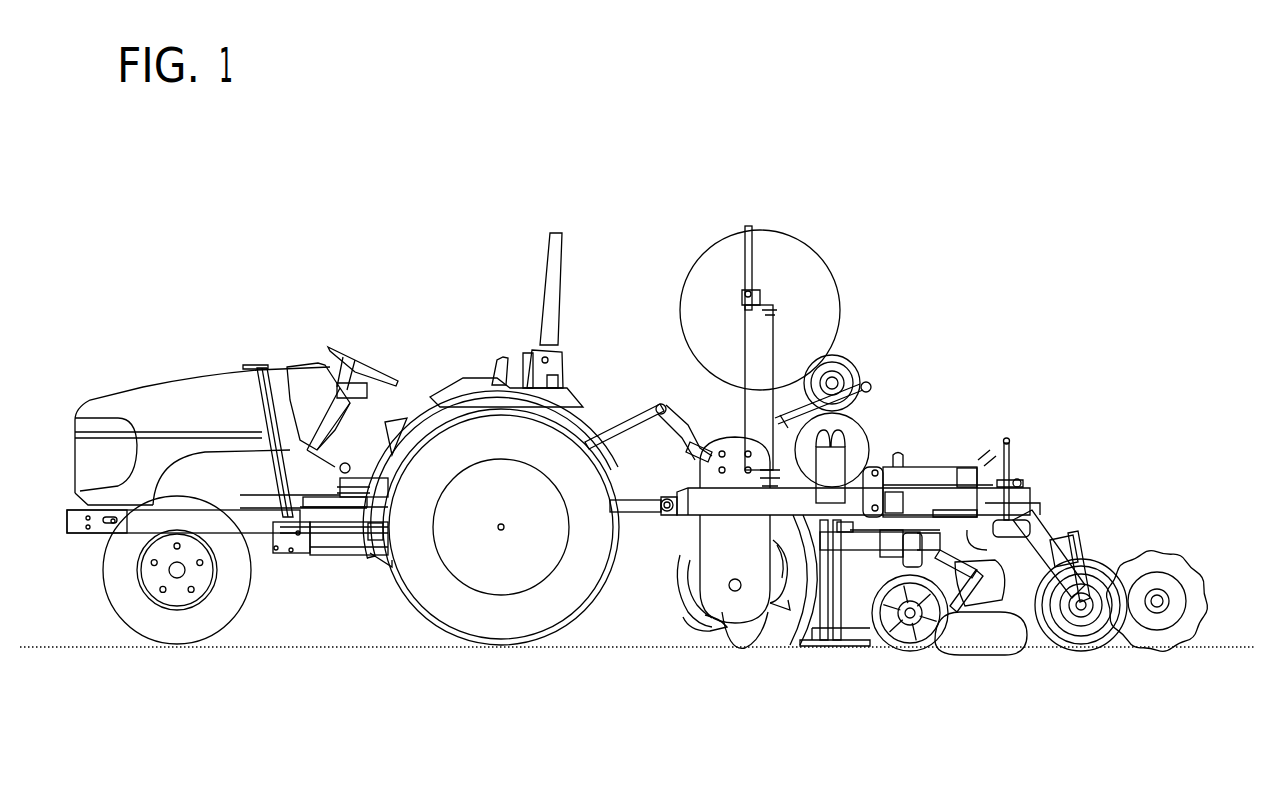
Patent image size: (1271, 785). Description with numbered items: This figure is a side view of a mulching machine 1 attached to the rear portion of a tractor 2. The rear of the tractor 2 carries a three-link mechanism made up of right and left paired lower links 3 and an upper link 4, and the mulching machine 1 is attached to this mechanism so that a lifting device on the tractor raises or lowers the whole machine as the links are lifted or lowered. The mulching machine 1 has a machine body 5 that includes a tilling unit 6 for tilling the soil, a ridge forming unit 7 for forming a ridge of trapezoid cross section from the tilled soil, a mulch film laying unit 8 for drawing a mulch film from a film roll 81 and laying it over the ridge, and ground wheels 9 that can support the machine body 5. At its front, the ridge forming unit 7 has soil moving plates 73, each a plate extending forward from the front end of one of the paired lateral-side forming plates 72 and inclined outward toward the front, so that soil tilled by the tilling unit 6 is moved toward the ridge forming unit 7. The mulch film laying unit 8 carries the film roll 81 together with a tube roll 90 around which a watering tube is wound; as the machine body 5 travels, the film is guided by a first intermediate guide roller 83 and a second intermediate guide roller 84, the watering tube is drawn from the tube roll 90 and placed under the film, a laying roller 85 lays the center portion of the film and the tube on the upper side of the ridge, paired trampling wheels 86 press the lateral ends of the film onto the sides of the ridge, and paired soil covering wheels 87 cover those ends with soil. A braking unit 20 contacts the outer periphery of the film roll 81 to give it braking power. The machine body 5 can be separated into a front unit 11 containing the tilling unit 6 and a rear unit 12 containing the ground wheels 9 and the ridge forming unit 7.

The mulching machine 1 is at (995, 262).
The tractor 2 is at (383, 308).
The lower link 3 is at (648, 498).
The upper link 4 is at (628, 428).
The machine body 5 is at (878, 398).
The tilling unit 6 is at (720, 650).
The ridge forming unit 7 is at (845, 657).
The mulch film laying unit 8 is at (1049, 480).
The ground wheel 9 is at (910, 655).
The front unit 11 is at (681, 652).
The rear unit 12 is at (1018, 652).
The braking unit 20 is at (843, 350).
The lateral-side forming plate 72 is at (866, 650).
The soil moving plate 73 is at (774, 645).
The film roll 81 is at (870, 432).
The first intermediate guide roller 83 is at (1000, 478).
The second intermediate guide roller 84 is at (975, 548).
The laying roller 85 is at (1057, 532).
The trampling wheel 86 is at (1102, 575).
The soil covering wheel 87 is at (1177, 564).
The tube roll 90 is at (805, 262).